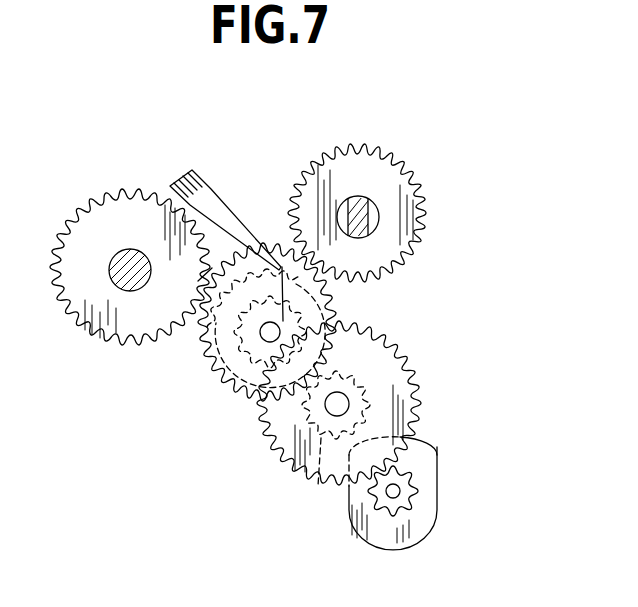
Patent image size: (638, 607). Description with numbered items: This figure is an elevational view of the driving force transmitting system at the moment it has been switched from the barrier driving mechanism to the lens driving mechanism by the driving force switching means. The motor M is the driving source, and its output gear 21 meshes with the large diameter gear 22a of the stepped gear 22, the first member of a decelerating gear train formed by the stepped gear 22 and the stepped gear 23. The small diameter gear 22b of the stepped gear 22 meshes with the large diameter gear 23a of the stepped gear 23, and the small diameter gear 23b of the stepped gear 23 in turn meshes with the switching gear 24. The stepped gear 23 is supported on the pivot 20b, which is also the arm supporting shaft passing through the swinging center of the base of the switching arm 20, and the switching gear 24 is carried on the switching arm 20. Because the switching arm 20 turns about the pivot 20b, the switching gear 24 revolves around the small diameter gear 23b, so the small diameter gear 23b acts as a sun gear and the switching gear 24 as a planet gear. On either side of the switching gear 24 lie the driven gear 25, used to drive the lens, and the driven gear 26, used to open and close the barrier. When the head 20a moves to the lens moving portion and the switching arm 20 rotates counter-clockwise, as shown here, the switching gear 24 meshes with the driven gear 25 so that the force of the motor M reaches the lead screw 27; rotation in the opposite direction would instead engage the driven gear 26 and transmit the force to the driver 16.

The driver 16 is at (377, 217).
The switching arm 20 is at (211, 231).
The head 20a is at (175, 184).
The pivot 20b is at (277, 254).
The output gear 21 is at (418, 488).
The stepped gear 22 is at (424, 414).
The large diameter gear 22a is at (395, 380).
The small diameter gear 22b is at (322, 487).
The stepped gear 23 is at (336, 308).
The large diameter gear 23a is at (245, 397).
The small diameter gear 23b is at (247, 363).
The switching gear 24 is at (210, 270).
The driven gear 25 is at (122, 318).
The driven gear 26 is at (330, 180).
The lead screw 27 is at (123, 262).
The motor M is at (423, 515).